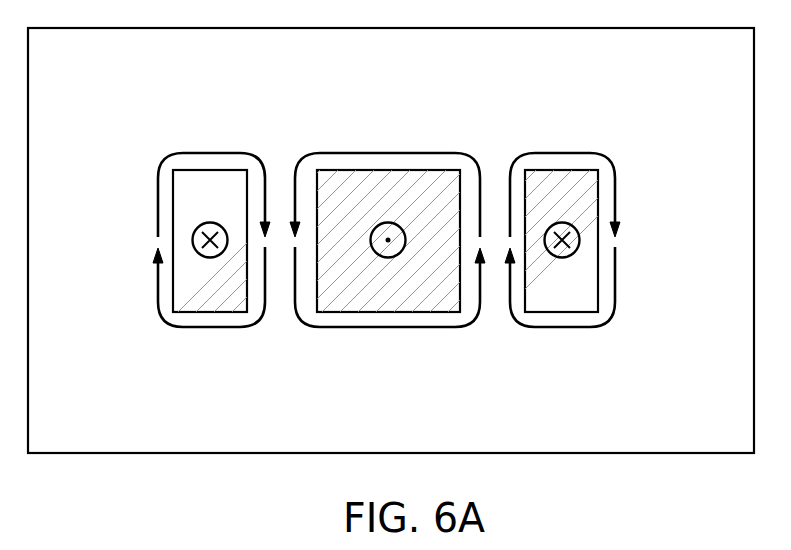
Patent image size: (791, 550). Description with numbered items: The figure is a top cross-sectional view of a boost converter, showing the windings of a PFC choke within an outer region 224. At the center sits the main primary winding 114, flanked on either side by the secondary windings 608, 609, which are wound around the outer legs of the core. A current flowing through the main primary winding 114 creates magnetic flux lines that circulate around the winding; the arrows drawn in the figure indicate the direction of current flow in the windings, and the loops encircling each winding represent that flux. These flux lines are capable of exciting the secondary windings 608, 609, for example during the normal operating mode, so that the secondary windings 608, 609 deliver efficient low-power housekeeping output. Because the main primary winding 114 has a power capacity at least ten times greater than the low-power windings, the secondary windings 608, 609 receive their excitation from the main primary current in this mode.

The substrate / enclosure 224 is at (685, 65).
The main primary winding L2 114 is at (390, 152).
The secondary winding L4 608 is at (211, 152).
The secondary winding L5 609 is at (562, 152).